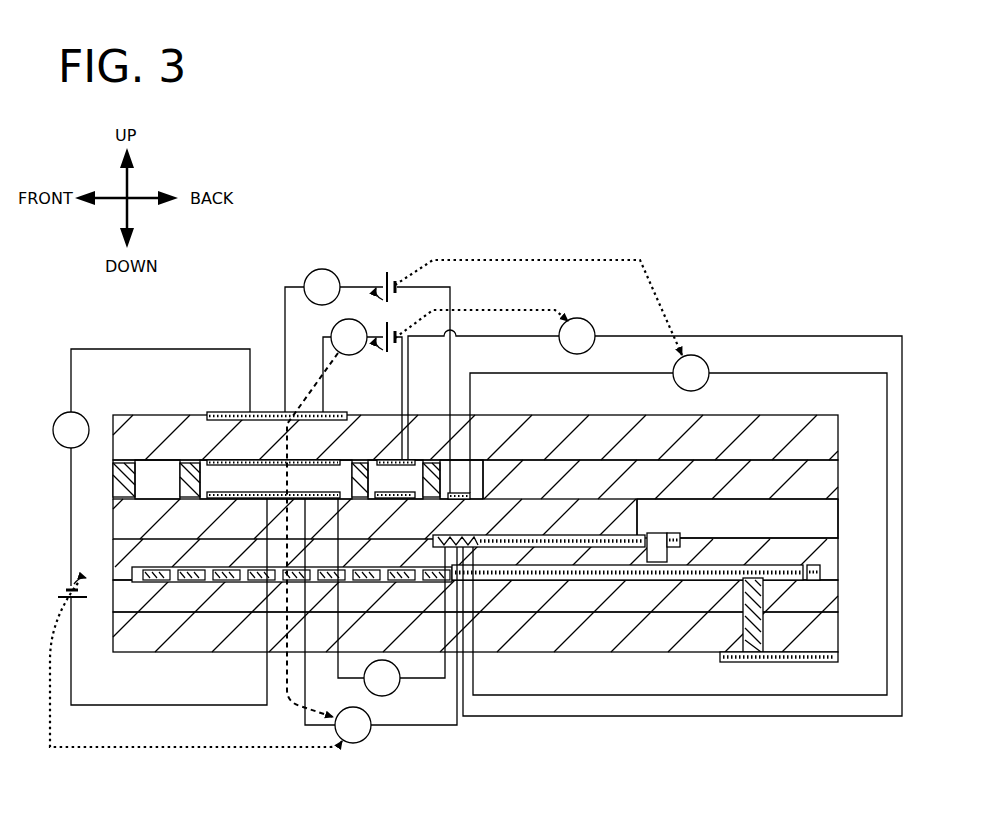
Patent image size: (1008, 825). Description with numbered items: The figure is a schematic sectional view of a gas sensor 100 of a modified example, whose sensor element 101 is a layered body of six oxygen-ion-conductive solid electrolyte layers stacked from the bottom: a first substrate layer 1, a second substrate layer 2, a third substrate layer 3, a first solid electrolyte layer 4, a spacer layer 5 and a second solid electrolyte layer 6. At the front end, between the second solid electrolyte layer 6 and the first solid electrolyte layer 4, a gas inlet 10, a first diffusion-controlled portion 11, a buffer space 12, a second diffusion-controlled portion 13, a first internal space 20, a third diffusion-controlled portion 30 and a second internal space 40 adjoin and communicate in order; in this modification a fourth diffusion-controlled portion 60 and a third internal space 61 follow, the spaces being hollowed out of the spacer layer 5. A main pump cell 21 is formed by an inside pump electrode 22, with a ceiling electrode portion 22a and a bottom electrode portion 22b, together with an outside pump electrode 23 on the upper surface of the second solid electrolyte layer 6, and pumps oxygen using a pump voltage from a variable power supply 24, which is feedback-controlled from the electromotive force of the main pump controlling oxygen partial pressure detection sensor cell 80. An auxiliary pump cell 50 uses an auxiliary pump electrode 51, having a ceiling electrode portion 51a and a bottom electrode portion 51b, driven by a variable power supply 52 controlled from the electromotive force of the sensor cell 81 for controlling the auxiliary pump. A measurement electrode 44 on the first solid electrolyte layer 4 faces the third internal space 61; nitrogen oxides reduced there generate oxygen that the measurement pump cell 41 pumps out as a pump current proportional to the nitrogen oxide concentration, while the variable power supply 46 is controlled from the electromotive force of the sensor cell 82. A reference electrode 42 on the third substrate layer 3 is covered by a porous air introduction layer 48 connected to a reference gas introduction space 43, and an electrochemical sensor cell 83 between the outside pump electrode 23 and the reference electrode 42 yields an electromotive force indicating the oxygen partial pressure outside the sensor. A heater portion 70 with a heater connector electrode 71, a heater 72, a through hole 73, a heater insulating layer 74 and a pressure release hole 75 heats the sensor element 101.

The first substrate layer 1 is at (842, 630).
The second substrate layer 2 is at (842, 594).
The third substrate layer 3 is at (842, 556).
The first solid electrolyte layer 4 is at (113, 512).
The spacer layer 5 is at (842, 461).
The second solid electrolyte layer 6 is at (842, 438).
The gas inlet 10 is at (113, 479).
The first diffusion-controlled portion 11 is at (128, 461).
The buffer space 12 is at (168, 462).
The second diffusion-controlled portion 13 is at (192, 460).
The first internal space 20 is at (313, 478).
The main pump cell 21 is at (153, 348).
The inside pump electrode 22 is at (263, 462).
The ceiling electrode portion 22a is at (295, 417).
The bottom electrode portion 22b is at (258, 492).
The outside pump electrode 23 is at (222, 412).
The variable power supply 24 is at (58, 596).
The third diffusion-controlled portion 30 is at (362, 463).
The second internal space 40 is at (373, 425).
The measurement pump cell 41 is at (308, 270).
The reference electrode 42 is at (476, 541).
The reference gas introduction space 43 is at (835, 530).
The measurement electrode 44 is at (458, 500).
The variable power supply 46 is at (389, 274).
The air introduction layer 48 is at (637, 533).
The auxiliary pump cell 50 is at (331, 331).
The auxiliary pump electrode 51 is at (378, 477).
The ceiling electrode portion 51a is at (413, 460).
The bottom electrode portion 51b is at (390, 500).
The variable power supply 52 is at (392, 349).
The fourth diffusion-controlled portion 60 is at (431, 463).
The third internal space 61 is at (477, 480).
The heater portion 70 is at (548, 583).
The heater connector electrode 71 is at (841, 656).
The heater 72 is at (160, 582).
The through hole 73 is at (755, 640).
The heater insulating layer 74 is at (140, 583).
The pressure release hole 75 is at (661, 536).
The main pump controlling oxygen partial pressure detection sensor cell 80 is at (386, 737).
The oxygen partial pressure detection sensor cell for controlling the auxiliary pump 81 is at (742, 333).
The measurement pump controlling oxygen partial pressure detection sensor cell 82 is at (746, 372).
The electrochemical sensor cell 83 is at (405, 691).
The gas sensor 100 is at (775, 256).
The sensor element 101 is at (131, 397).